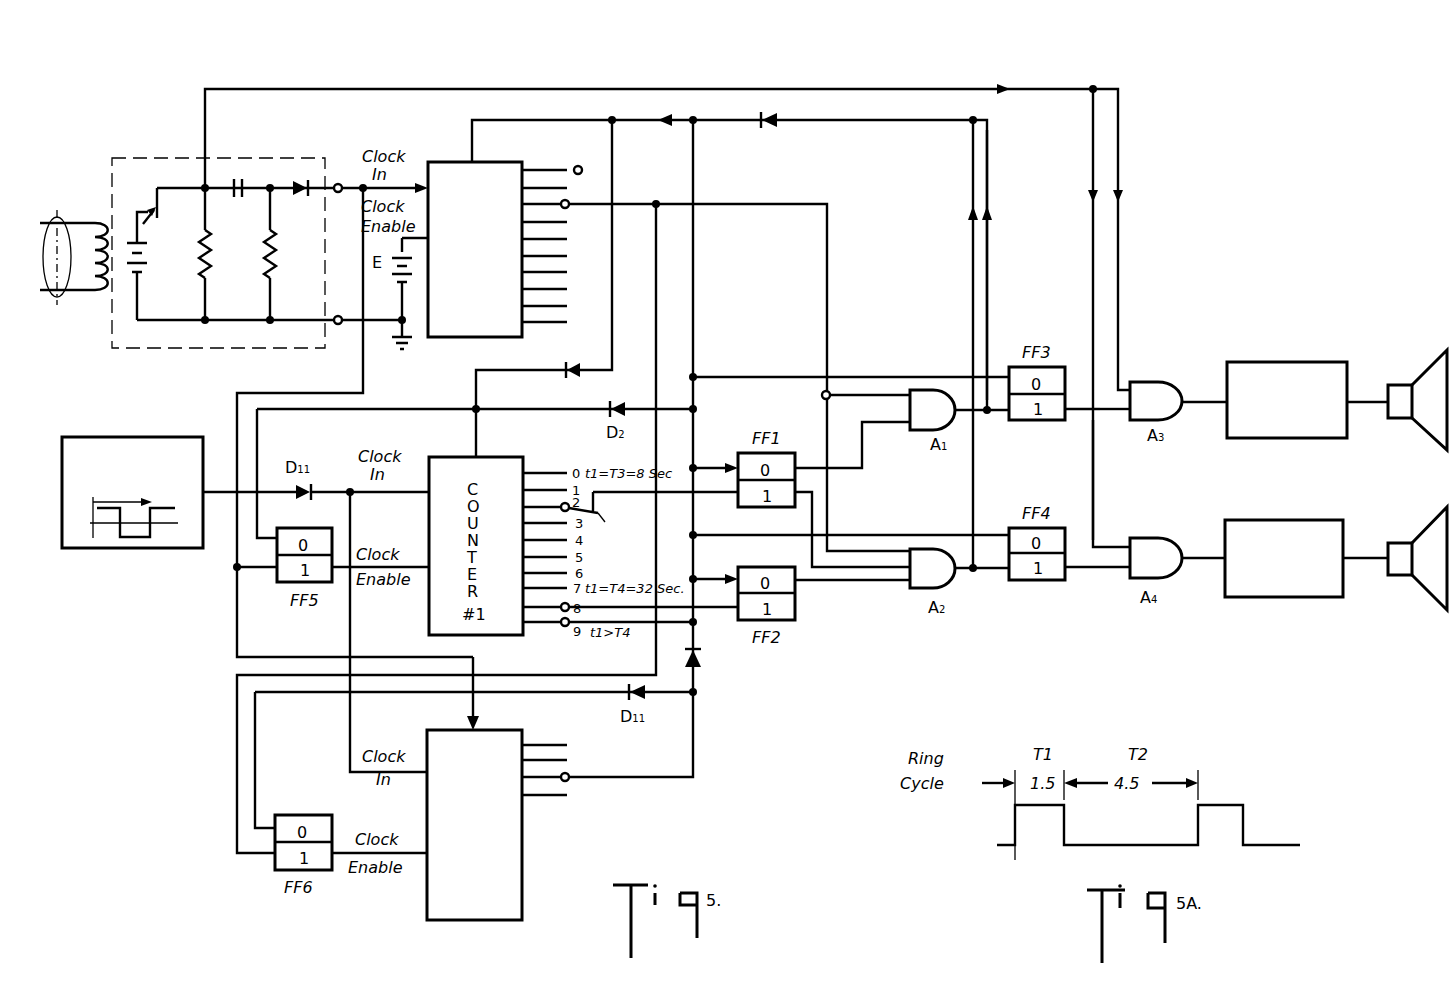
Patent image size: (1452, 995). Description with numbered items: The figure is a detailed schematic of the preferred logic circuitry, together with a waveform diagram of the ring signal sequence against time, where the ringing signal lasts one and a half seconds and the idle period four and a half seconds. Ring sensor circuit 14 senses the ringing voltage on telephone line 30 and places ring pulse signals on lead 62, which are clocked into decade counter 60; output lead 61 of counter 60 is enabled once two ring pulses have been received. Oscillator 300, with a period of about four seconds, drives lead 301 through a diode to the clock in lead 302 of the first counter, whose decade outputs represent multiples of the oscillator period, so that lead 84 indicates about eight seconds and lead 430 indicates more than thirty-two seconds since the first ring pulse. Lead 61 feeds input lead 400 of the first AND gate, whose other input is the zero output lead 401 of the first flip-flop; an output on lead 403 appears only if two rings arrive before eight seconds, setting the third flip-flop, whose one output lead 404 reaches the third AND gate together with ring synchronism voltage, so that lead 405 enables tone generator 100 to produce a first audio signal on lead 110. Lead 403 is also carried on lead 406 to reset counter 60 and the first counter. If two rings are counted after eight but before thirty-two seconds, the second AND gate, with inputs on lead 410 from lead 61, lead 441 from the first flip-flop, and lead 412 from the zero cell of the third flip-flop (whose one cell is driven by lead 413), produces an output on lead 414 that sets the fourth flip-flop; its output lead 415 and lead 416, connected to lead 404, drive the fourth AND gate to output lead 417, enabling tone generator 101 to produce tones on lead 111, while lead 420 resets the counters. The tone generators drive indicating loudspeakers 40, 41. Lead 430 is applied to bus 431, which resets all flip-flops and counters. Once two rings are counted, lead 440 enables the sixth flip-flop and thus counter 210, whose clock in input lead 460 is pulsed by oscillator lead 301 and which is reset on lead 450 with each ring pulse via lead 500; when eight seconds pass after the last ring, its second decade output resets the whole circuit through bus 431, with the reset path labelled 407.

The telephone line 30 is at (52, 217).
The ring sensor circuit 14 is at (220, 350).
The lead 62 is at (338, 183).
The lead 500 is at (365, 381).
The counter 60 is at (450, 340).
The reset line 407 is at (600, 122).
The output lead 61 is at (643, 200).
The bus 431 is at (695, 288).
The lead 406 is at (989, 248).
The input lead 400 is at (880, 394).
The lead 401 is at (862, 456).
The lead 410 is at (828, 513).
The FF1 complementary output line 441 is at (873, 565).
The lead 412 is at (825, 582).
The lead 413 is at (717, 610).
The lead 403 is at (998, 427).
The lead 420 is at (1000, 475).
The one output lead 404 is at (1110, 412).
The lead 416 is at (1097, 486).
The lead 414 is at (1013, 575).
The lead 415 is at (1097, 572).
The lead 405 is at (1197, 396).
The lead 417 is at (1193, 553).
The tone generator #1 100 is at (1253, 438).
The tone generator #2 101 is at (1253, 597).
The lead 110 is at (1373, 398).
The lead 111 is at (1367, 556).
The loudspeaker 40 is at (1433, 370).
The loudspeaker 41 is at (1433, 583).
The oscillator 300 is at (127, 548).
The lead 301 is at (218, 488).
The clock in lead 302 is at (370, 497).
The lead 84 is at (649, 513).
The lead 430 is at (668, 626).
The lead 440 is at (237, 764).
The lead 450 is at (480, 705).
The clock in input lead 460 is at (350, 726).
The counter #2 210 is at (522, 880).